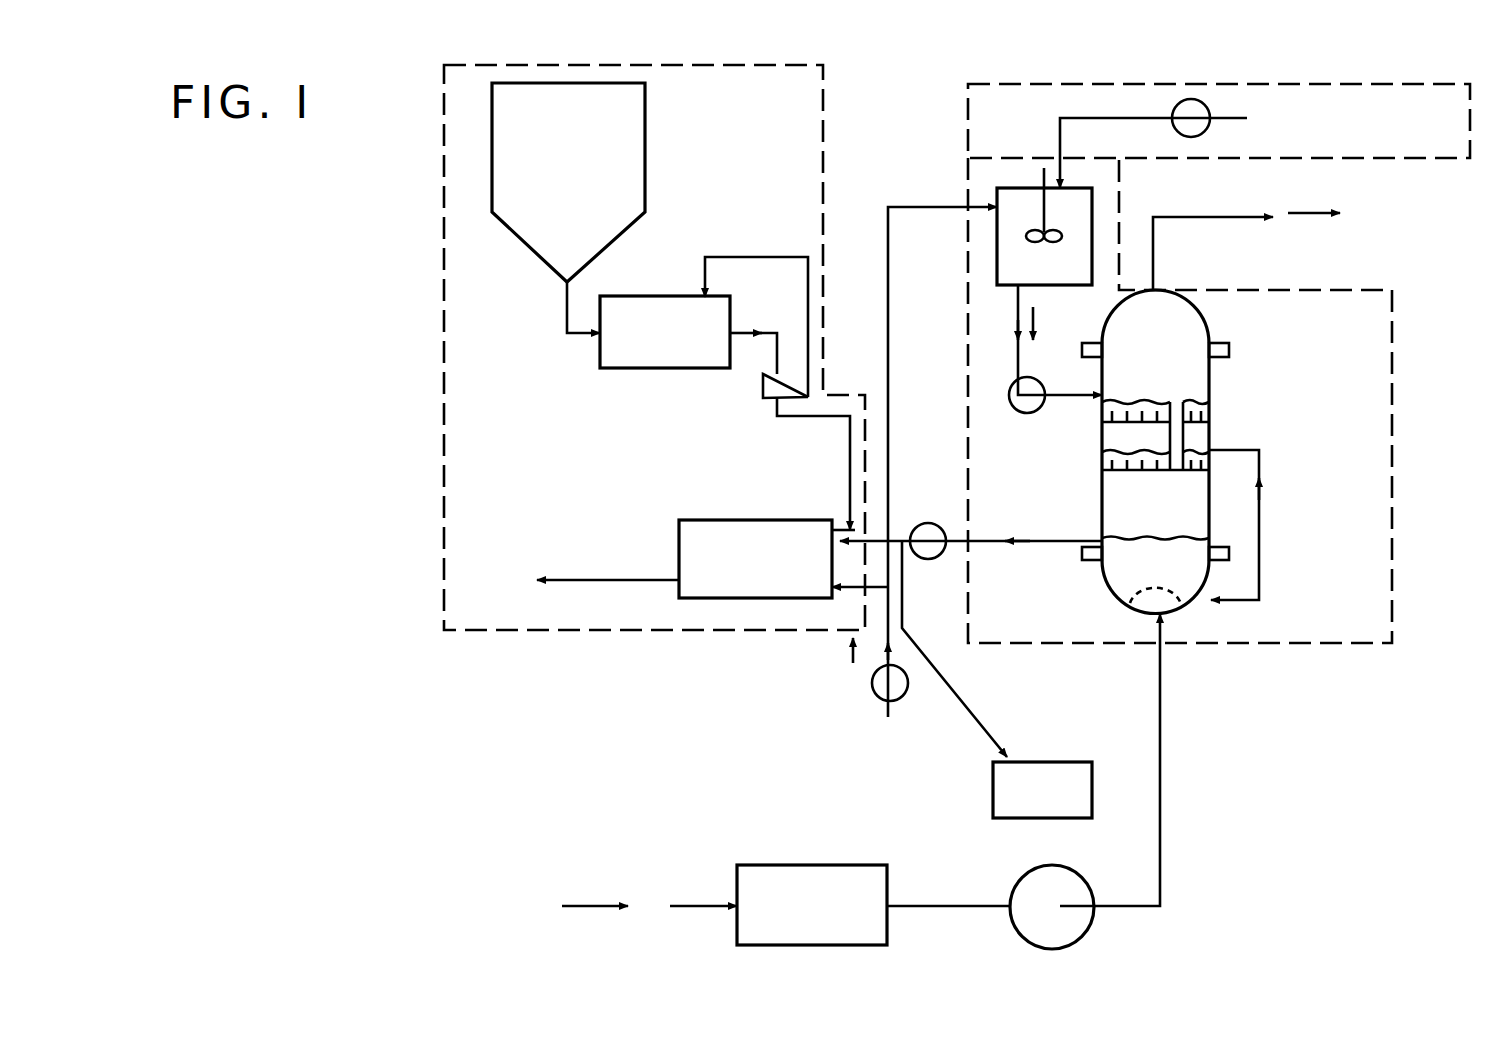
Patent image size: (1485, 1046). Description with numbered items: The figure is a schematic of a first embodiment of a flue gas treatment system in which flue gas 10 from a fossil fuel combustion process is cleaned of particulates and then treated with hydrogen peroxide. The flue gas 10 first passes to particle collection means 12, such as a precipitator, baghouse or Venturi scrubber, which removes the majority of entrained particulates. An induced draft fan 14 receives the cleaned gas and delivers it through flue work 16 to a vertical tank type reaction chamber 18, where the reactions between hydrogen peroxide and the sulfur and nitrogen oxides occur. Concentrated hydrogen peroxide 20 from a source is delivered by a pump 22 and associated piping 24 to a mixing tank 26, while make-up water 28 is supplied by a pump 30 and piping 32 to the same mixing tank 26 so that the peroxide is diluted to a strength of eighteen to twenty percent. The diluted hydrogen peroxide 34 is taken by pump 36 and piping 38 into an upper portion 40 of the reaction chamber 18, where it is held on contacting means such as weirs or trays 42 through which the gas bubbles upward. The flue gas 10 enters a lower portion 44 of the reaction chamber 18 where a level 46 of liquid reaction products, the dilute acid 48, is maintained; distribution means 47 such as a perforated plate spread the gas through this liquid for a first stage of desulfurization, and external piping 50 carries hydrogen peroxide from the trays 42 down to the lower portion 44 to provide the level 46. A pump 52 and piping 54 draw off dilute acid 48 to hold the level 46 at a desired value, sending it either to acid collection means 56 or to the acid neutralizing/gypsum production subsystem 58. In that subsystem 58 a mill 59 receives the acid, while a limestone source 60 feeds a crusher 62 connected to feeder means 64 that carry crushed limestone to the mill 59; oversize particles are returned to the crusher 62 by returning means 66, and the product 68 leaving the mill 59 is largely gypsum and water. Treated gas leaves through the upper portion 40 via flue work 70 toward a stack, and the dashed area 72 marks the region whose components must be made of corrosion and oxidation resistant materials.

The flue gas 10 is at (1305, 213).
The particle collection means 12 is at (776, 875).
The induced draft fan 14 is at (1058, 876).
The flue work 16 is at (937, 906).
The reaction chamber 18 is at (1197, 328).
The hydrogen peroxide 20 is at (1147, 104).
The pump 22 is at (1185, 125).
The piping 24 is at (1060, 118).
The mixing tank 26 is at (1020, 195).
The water 28 is at (853, 658).
The pump 30 is at (900, 700).
The piping 32 is at (888, 305).
The diluted hydrogen peroxide 34 is at (1036, 318).
The pump 36 is at (1035, 385).
The piping 38 is at (1017, 318).
The upper portion of reaction chamber 40 is at (1173, 373).
The trays 42 is at (1206, 466).
The lower portion of reaction chamber 44 is at (1173, 580).
The level 46 is at (1140, 538).
The distribution means 47 is at (1180, 614).
The dilute acid 48 is at (1027, 525).
The external piping 50 is at (1260, 525).
The pump 52 is at (925, 528).
The piping 54 is at (978, 540).
The acid collection means 56 is at (1063, 808).
The acid neutralizing/gypsum production subsystem 58 is at (522, 441).
The mill 59 is at (778, 575).
The limestone source 60 is at (640, 97).
The crusher 62 is at (652, 368).
The feeder means 64 is at (770, 400).
The returning means 66 is at (748, 257).
The product 68 is at (655, 580).
The flue work 70 is at (1157, 265).
The dashed area 72 is at (1393, 360).